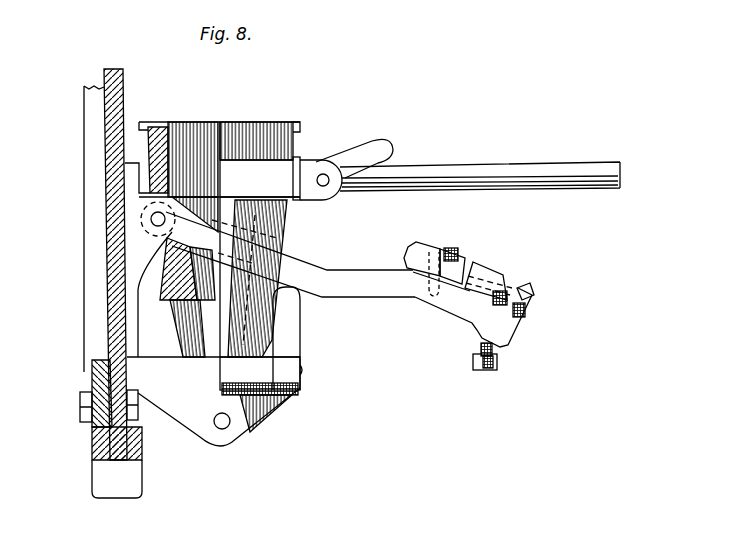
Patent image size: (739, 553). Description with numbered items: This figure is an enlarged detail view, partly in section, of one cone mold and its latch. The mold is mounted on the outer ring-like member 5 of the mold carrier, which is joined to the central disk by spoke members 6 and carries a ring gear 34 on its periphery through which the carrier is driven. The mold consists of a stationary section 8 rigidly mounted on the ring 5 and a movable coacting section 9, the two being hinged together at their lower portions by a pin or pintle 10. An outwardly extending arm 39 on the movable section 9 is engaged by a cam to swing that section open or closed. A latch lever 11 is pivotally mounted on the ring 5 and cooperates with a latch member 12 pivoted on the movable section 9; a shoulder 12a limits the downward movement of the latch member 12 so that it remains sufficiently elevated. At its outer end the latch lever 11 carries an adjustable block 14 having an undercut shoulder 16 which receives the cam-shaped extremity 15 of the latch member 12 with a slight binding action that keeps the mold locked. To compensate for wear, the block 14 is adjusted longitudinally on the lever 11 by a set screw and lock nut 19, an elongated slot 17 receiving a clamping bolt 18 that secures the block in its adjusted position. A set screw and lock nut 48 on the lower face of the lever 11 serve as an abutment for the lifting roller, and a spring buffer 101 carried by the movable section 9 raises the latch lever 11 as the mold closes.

The outer ring-like member 5 is at (113, 306).
The spoke members 6 is at (88, 262).
The stationary section 8 is at (188, 128).
The movable coacting section 9 is at (270, 236).
The pin or pintle 10 is at (228, 426).
The latch lever 11 is at (373, 300).
The latch member 12 is at (346, 160).
The shoulder 12a is at (323, 188).
The adjustable block 14 is at (420, 248).
The cam-shaped extremity 15 is at (385, 152).
The undercut shoulder 16 is at (403, 254).
The elongated slot 17 is at (470, 263).
The clamping bolt 18 is at (455, 250).
The set screw and lock nut 19 is at (529, 290).
The ring gear 34 is at (127, 470).
The outwardly extending arm 39 is at (505, 175).
The set screw and lock nut 48 is at (498, 366).
The spring buffer 101 is at (303, 334).